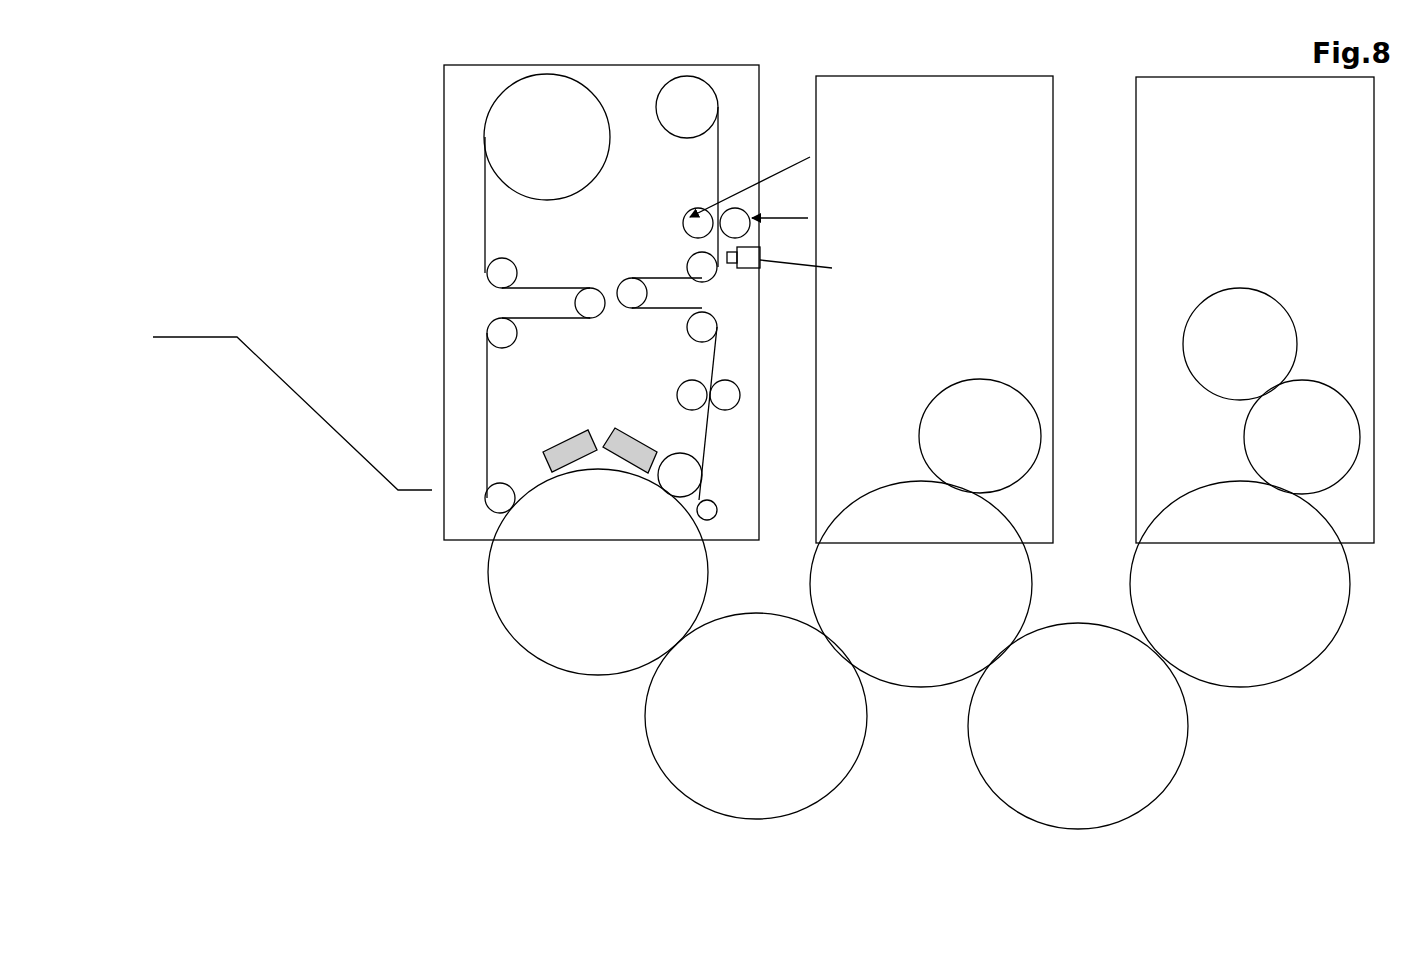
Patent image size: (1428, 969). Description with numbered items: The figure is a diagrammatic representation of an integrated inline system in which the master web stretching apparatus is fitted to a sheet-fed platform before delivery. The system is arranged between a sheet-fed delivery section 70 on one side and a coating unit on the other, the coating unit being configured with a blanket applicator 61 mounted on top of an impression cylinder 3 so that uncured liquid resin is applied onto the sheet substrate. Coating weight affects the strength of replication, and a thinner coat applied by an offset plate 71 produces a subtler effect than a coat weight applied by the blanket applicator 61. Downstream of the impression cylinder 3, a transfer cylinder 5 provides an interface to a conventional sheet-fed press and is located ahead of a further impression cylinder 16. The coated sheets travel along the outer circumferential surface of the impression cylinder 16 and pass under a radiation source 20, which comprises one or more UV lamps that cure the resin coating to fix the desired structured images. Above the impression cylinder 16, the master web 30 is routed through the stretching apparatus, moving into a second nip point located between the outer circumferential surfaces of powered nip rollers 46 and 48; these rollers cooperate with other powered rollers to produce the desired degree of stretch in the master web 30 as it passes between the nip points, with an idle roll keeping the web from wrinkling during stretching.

The impression cylinder 3 is at (908, 643).
The transfer cylinder 5 is at (690, 737).
The impression cylinder 16 is at (585, 593).
The radiation source 20 is at (648, 453).
The master web 30 is at (715, 165).
The nip roller 46 is at (688, 378).
The nip roller 48 is at (742, 387).
The blanket applicator 61 is at (1001, 407).
The sheet-fed delivery section 70 is at (228, 415).
The offset plate 71 is at (1245, 307).